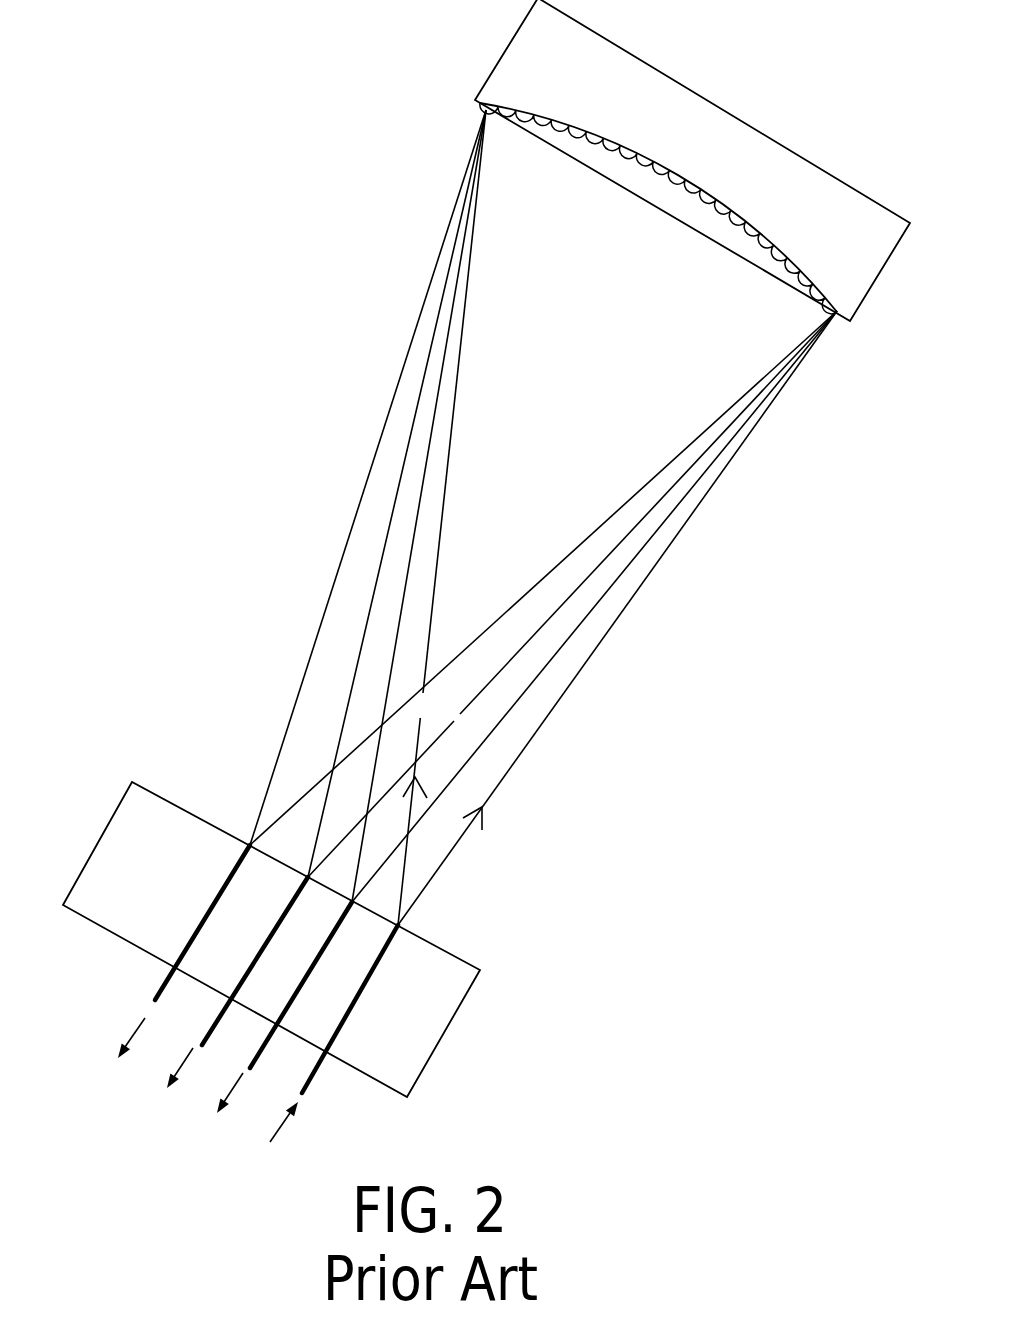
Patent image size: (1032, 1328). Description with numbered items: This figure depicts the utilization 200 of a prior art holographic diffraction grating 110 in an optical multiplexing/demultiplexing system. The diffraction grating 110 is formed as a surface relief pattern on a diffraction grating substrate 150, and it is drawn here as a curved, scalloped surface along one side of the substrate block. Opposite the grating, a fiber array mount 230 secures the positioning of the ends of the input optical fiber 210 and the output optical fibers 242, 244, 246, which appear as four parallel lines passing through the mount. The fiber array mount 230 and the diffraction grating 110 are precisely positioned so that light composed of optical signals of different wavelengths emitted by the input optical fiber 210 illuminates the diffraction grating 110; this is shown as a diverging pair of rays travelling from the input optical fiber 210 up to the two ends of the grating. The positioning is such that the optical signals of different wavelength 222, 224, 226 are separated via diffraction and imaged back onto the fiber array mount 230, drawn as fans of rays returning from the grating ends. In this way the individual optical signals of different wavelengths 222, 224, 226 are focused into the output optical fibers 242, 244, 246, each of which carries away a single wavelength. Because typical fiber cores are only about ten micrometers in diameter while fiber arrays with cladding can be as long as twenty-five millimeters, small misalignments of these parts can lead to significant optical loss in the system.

The utilization 200 is at (183, 54).
The holographic diffraction grating 110 is at (461, 60).
The diffraction grating substrate 150 is at (686, 96).
The fiber array mount 230 is at (448, 1030).
The input optical fiber 210 is at (322, 1068).
The optical signal of different wavelength 222 is at (375, 758).
The optical signal of different wavelength 224 is at (372, 598).
The optical signal of different wavelength 226 is at (338, 577).
The output optical fiber 242 is at (170, 971).
The output optical fiber 244 is at (221, 1002).
The output optical fiber 246 is at (267, 1037).